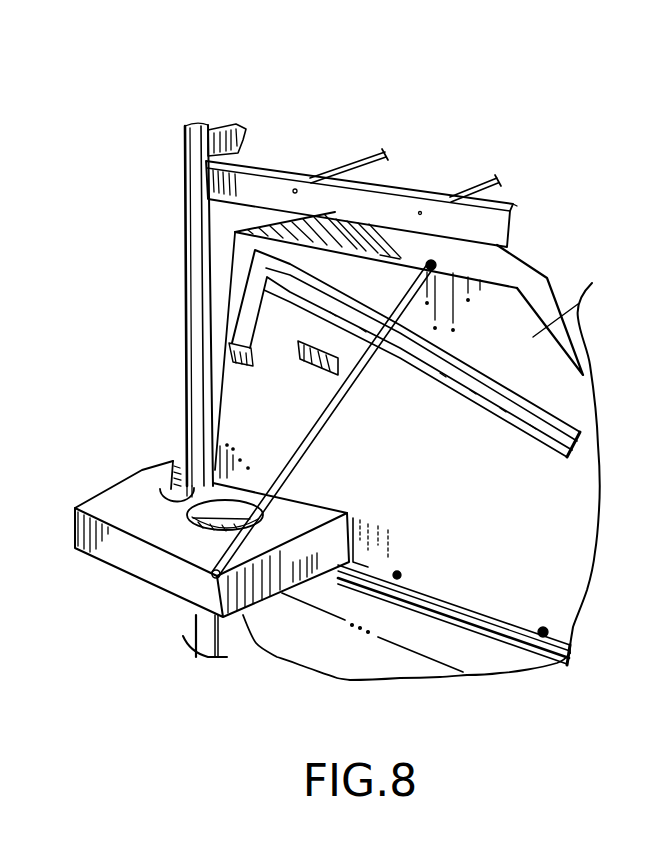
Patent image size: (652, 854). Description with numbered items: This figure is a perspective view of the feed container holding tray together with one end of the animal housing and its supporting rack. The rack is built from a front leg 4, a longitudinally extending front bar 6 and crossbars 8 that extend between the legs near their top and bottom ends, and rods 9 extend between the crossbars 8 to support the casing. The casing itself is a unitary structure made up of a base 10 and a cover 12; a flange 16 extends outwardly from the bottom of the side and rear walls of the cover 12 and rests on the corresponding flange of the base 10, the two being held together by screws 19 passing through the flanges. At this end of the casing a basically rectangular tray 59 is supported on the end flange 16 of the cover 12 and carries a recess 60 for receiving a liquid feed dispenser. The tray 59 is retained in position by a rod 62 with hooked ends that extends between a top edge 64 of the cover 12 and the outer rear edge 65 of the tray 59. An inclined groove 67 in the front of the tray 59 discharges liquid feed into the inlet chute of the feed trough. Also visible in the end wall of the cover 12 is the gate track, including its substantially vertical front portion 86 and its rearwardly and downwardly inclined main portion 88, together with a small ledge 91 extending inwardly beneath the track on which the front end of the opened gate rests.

The front leg 4 is at (185, 157).
The front bar 6 is at (228, 128).
The crossbar 8 is at (510, 227).
The rod 9 is at (342, 172).
The base 10 is at (400, 658).
The cover 12 is at (592, 283).
The flange 16 is at (450, 597).
The screw 19 is at (547, 630).
The tray 59 is at (143, 559).
The recess 60 is at (262, 505).
The rod 62 is at (330, 410).
The top edge 64 is at (385, 258).
The outer rear edge 65 is at (198, 578).
The inclined groove 67 is at (170, 484).
The front portion 86 is at (238, 312).
The main portion 88 is at (442, 268).
The ledge 91 is at (300, 356).